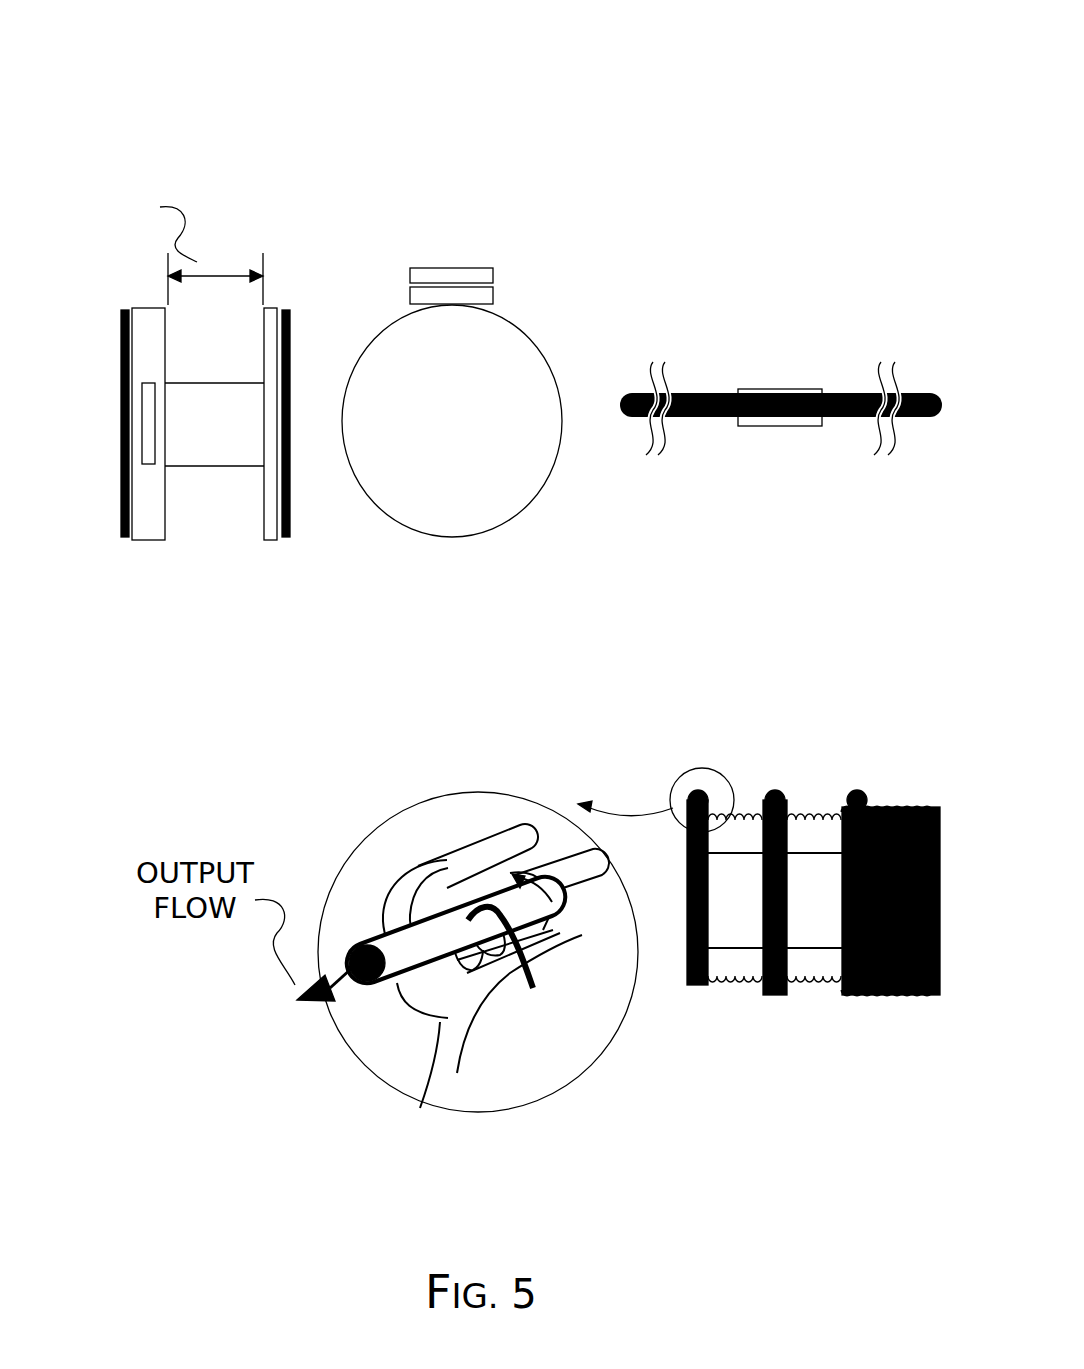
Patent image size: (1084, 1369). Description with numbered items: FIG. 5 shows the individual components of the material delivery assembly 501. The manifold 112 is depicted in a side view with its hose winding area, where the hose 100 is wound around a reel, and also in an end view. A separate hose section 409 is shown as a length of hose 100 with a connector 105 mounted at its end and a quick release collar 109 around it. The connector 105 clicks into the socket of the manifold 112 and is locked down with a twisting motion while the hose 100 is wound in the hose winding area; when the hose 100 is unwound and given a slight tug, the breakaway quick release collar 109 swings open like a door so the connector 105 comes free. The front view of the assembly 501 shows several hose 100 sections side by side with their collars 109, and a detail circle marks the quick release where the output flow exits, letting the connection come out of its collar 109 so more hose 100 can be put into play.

The assembly 501 is at (338, 117).
The manifold 112 is at (450, 517).
The quick release collar 109 is at (455, 268).
The connector 105 is at (827, 390).
The hose 100 is at (930, 418).
The hose section 409 is at (747, 479).